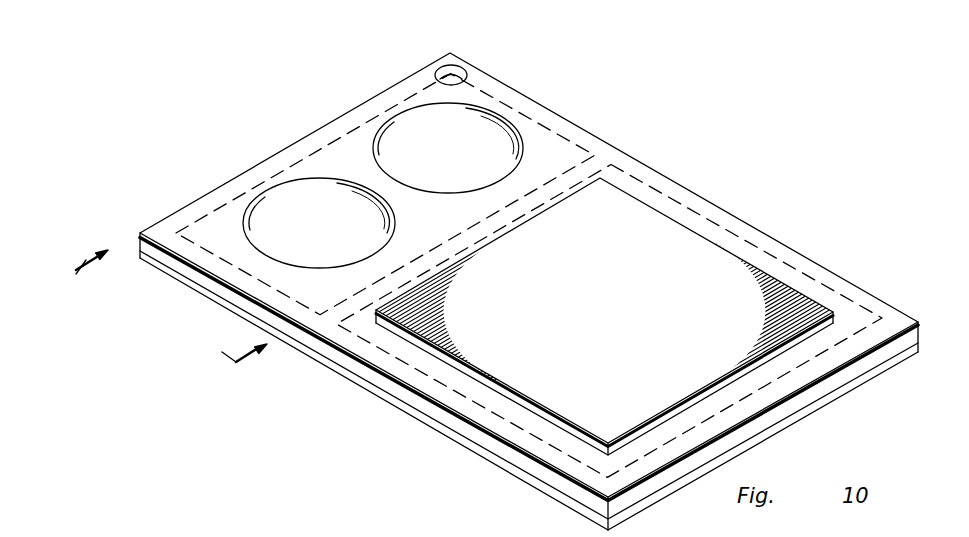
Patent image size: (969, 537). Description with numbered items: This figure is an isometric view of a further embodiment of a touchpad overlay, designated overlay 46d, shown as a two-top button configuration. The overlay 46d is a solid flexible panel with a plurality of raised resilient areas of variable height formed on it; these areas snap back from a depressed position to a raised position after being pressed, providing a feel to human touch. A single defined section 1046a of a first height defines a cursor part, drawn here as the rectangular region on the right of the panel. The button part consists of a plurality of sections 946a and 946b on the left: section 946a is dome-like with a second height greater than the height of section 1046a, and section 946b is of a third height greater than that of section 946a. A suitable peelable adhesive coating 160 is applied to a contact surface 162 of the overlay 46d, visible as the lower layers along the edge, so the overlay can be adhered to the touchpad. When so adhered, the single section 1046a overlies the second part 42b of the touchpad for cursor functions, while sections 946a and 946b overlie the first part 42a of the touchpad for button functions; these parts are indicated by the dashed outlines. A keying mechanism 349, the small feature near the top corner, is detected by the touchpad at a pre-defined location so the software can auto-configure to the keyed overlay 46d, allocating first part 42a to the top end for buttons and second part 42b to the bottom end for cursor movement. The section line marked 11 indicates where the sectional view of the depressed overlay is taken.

The section line 11- 11 is at (153, 318).
The first part of touchpad 42a is at (528, 122).
The second part of touchpad 42b is at (810, 284).
The overlay 46d is at (718, 209).
The peelable adhesive coating 160 is at (530, 485).
The contact surface 162 is at (448, 428).
The keying mechanism 349 is at (457, 65).
The section 946a is at (300, 197).
The section 946b is at (422, 123).
The single defined section 1046a is at (626, 200).